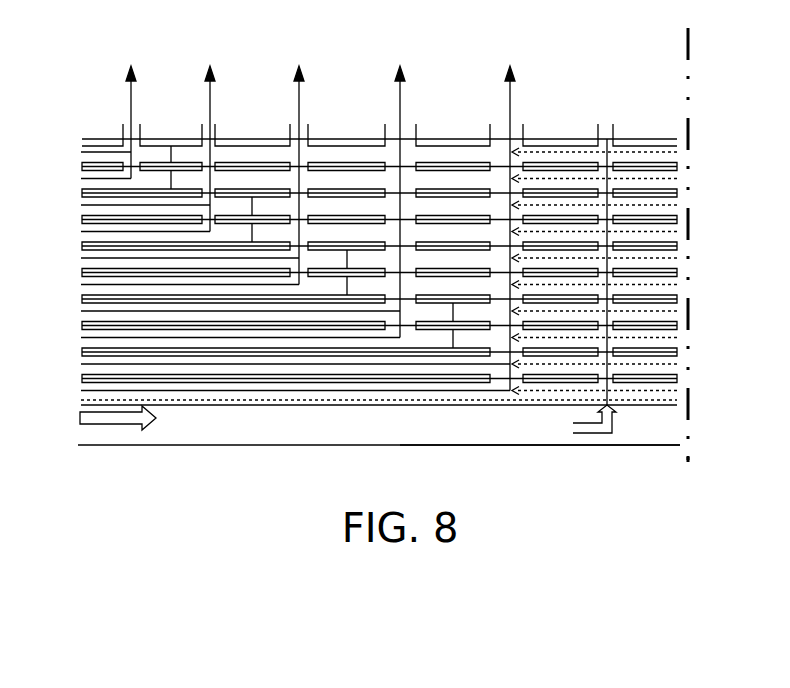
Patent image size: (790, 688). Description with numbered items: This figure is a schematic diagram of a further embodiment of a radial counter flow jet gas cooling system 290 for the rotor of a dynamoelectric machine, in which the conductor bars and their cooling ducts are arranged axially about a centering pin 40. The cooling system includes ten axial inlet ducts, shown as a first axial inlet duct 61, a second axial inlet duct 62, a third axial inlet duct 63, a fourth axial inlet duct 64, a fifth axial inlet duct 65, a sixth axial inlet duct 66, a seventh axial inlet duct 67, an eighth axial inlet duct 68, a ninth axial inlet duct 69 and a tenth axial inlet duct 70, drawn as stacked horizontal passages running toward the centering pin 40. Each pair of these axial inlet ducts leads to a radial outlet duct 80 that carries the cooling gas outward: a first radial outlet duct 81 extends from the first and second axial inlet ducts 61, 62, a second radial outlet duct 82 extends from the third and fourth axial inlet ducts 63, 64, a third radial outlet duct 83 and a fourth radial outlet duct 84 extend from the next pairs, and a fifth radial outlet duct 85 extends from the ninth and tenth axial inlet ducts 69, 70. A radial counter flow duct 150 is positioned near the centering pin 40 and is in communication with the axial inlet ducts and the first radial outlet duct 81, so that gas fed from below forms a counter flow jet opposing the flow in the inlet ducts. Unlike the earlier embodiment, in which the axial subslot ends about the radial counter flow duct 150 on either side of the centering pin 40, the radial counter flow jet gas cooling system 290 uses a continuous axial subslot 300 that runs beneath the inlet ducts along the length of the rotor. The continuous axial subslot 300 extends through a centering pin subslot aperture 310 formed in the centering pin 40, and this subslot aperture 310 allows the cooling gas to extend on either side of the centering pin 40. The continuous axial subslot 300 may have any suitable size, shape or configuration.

The centering pin 40 is at (688, 36).
The first axial inlet duct 61 is at (81, 390).
The second axial inlet duct 62 is at (81, 364).
The third axial inlet duct 63 is at (81, 338).
The fourth axial inlet duct 64 is at (81, 311).
The fifth axial inlet duct 65 is at (81, 284).
The sixth axial inlet duct 66 is at (81, 258).
The seventh axial inlet duct 67 is at (81, 232).
The eighth axial inlet duct 68 is at (81, 205).
The ninth axial inlet duct 69 is at (81, 178).
The tenth axial inlet duct 70 is at (81, 152).
The radial outlet duct 80 is at (489, 411).
The first radial outlet duct 81 is at (510, 118).
The second radial outlet duct 82 is at (400, 105).
The third radial outlet duct 83 is at (299, 105).
The fourth radial outlet duct 84 is at (210, 105).
The fifth radial outlet duct 85 is at (131, 105).
The radial counter flow duct 150 is at (607, 160).
The radial counter flow jet gas cooling system 290 is at (255, 446).
The continuous axial subslot 300 is at (528, 446).
The centering pin subslot aperture 310 is at (701, 468).